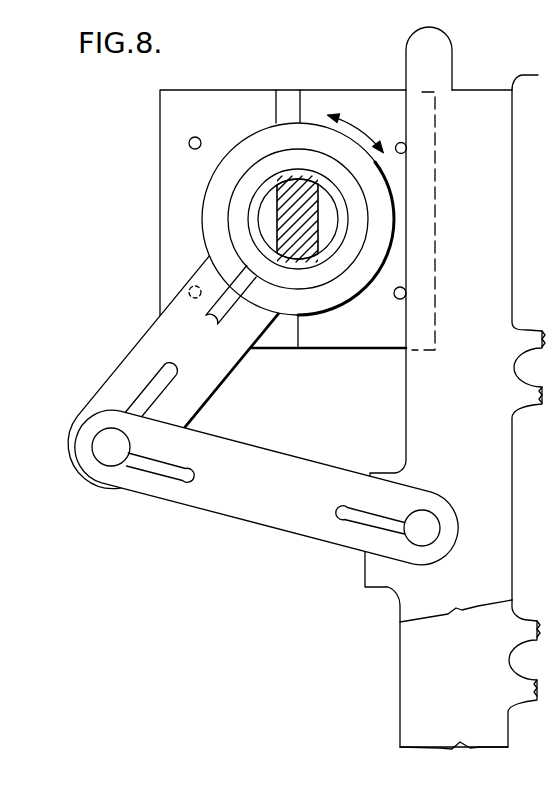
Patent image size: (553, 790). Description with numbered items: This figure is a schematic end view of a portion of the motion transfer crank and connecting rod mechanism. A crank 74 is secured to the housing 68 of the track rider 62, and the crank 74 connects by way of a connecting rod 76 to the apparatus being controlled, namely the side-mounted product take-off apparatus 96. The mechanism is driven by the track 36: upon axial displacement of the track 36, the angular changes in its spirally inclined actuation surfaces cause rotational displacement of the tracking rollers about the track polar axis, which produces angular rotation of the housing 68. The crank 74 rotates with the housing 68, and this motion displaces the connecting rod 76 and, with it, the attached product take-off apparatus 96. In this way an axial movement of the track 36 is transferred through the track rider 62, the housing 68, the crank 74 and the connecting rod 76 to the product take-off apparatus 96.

The track 36 is at (277, 208).
The track rider 62 is at (346, 90).
The housing 68 is at (276, 91).
The crank 74 is at (136, 348).
The connecting rod 76 is at (258, 445).
The product take-off apparatus 96 is at (424, 380).